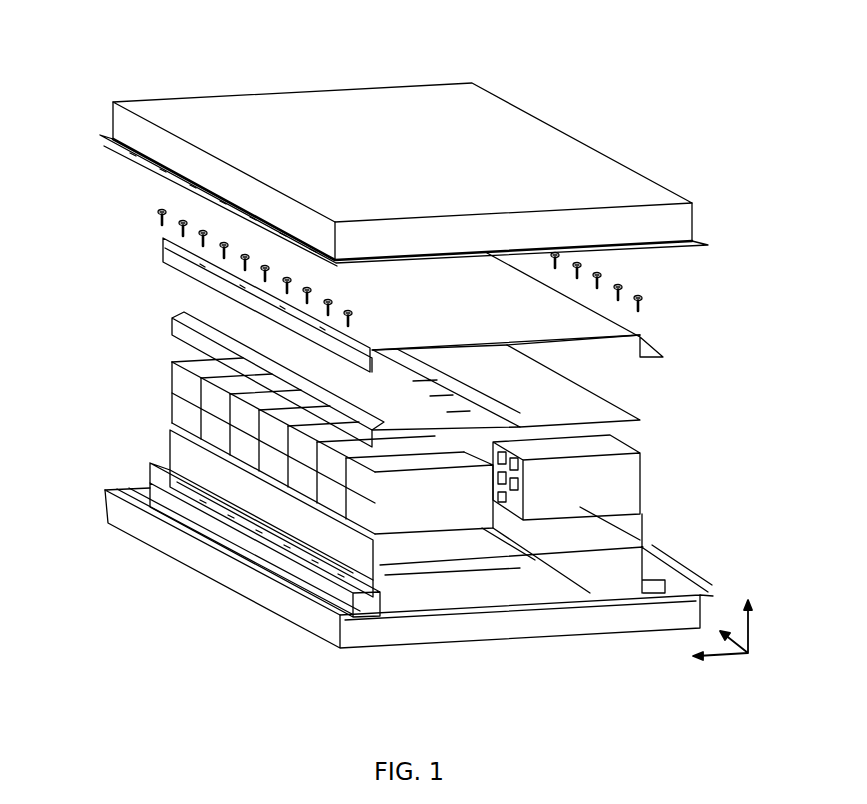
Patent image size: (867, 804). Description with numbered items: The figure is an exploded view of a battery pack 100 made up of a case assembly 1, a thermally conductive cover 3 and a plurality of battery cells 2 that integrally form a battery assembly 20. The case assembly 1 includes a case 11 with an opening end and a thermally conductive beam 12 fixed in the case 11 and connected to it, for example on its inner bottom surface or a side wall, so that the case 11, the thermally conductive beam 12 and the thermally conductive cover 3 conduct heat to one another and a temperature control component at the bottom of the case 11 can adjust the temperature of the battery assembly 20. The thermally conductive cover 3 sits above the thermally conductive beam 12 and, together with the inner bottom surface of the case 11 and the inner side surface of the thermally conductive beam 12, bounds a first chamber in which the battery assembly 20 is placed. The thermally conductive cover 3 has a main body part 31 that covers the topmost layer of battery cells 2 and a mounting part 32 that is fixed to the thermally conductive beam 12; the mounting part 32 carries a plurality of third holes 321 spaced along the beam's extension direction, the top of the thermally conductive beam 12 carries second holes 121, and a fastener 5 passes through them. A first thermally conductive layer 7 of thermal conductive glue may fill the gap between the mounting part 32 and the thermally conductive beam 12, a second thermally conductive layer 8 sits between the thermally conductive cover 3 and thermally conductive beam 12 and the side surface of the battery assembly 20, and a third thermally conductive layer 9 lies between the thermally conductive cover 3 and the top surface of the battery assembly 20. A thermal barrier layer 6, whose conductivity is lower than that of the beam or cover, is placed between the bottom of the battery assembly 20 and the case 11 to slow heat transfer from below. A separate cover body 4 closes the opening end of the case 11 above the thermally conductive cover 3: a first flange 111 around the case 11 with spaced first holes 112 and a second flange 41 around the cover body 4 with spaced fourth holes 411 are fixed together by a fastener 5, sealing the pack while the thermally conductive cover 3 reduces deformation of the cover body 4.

The battery pack 100 is at (373, 26).
The case assembly 1 is at (697, 577).
The case 11 is at (520, 628).
The first flange 111 is at (210, 543).
The first holes 112 is at (265, 572).
The thermally conductive beam 12 is at (336, 598).
The second holes 121 is at (190, 497).
The battery cells 2 is at (623, 493).
The battery assembly 20 is at (155, 400).
The thermally conductive cover 3 is at (183, 299).
The main body part 31 is at (605, 330).
The mounting part 32 is at (173, 267).
The third holes 321 is at (163, 262).
The cover body 4 is at (528, 141).
The second flange 41 is at (122, 142).
The fourth holes 411 is at (153, 171).
The fastener 5 is at (620, 286).
The thermal barrier layer 6 is at (408, 550).
The first thermally conductive layer 7 is at (168, 470).
The second thermally conductive layer 8 is at (180, 446).
The third thermally conductive layer 9 is at (598, 407).